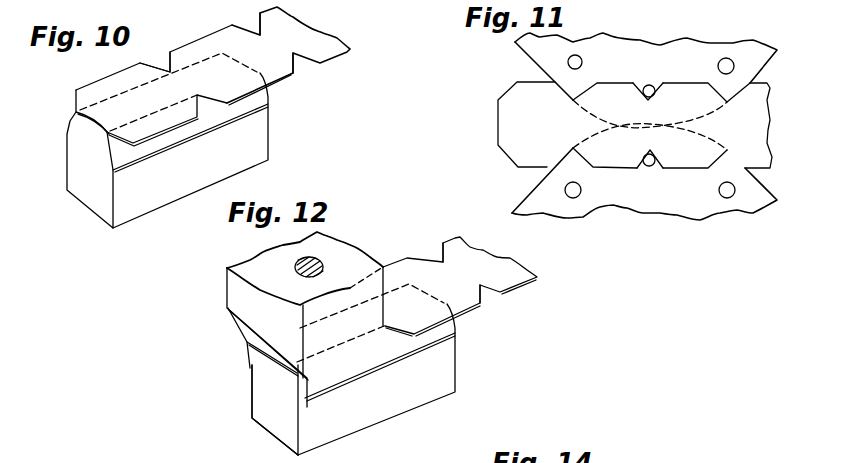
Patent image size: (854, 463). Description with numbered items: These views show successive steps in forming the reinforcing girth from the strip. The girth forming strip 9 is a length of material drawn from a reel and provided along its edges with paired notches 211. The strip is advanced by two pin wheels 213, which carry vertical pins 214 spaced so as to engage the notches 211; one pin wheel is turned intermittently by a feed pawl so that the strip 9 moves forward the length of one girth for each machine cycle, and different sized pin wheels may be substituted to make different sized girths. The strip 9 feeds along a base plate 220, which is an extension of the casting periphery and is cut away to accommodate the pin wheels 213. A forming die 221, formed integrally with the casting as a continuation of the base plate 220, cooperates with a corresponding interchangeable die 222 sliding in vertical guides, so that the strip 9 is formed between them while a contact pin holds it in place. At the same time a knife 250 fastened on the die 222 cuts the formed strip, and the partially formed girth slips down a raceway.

In FIG. 10, the girth forming strip 9 is at (290, 35).
In FIG. 11, the girth forming strip 9 is at (513, 120).
In FIG. 12, the girth forming strip 9 is at (477, 267).
In FIG. 10, the notches 211 is at (157, 63).
In FIG. 11, the notches 211 is at (576, 92).
In FIG. 12, the notches 211 is at (483, 294).
In FIG. 11, the pin wheels 213 is at (690, 55).
In FIG. 11, the vertical pins 214 is at (578, 58).
In FIG. 12, the base plate 220 is at (430, 372).
In FIG. 10, the forming die 221 is at (97, 170).
In FIG. 12, the forming die 221 is at (275, 387).
In FIG. 12, the die 222 is at (312, 246).
In FIG. 12, the knife 250 is at (247, 302).